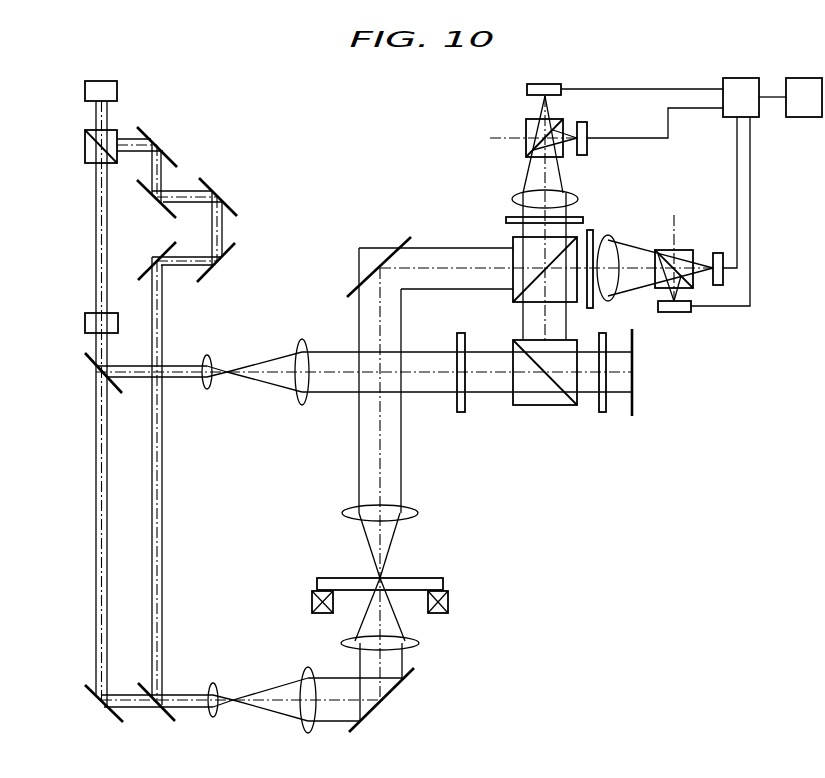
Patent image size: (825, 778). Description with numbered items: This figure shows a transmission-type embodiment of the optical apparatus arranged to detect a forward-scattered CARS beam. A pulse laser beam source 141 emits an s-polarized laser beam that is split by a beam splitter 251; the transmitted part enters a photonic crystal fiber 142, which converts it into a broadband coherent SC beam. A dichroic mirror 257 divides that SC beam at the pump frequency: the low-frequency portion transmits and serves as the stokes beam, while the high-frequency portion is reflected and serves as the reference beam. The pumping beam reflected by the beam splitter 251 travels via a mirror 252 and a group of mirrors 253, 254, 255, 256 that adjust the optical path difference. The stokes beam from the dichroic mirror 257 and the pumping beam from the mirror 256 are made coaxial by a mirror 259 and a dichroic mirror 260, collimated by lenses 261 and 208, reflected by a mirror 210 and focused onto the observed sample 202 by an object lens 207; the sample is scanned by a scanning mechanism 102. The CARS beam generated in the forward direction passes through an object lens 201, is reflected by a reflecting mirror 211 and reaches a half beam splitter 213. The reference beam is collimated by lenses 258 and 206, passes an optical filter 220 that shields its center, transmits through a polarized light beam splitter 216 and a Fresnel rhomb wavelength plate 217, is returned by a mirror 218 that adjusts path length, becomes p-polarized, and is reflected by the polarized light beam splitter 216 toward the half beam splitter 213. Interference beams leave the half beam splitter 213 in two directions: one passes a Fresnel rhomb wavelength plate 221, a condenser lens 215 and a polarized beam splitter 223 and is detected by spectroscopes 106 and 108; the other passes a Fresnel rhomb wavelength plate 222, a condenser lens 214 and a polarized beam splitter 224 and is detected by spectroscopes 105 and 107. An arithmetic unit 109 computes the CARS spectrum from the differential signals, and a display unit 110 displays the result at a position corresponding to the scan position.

The scanning mechanism 102 is at (449, 601).
The spectroscope 105 is at (550, 83).
The spectroscope 106 is at (717, 252).
The spectroscope 107 is at (589, 123).
The spectroscope 108 is at (676, 313).
The arithmetic unit 109 is at (742, 78).
The display unit 110 is at (806, 78).
The pulse laser beam source 141 is at (103, 80).
The photonic crystal fiber 142 is at (85, 322).
The object lens 201 is at (342, 513).
The observed sample 202 is at (420, 577).
The lens 206 is at (300, 340).
The object lens 207 is at (419, 643).
The lens 208 is at (305, 668).
The mirror 210 is at (405, 688).
The reflecting mirror 211 is at (372, 275).
The half beam splitter 213 is at (513, 240).
The condenser lens 214 is at (512, 192).
The condenser lens 215 is at (610, 236).
The polarized light beam splitter 216 is at (549, 406).
The Fresnel rhomb wavelength plate 217 is at (603, 413).
The mirror 218 is at (634, 400).
The optical filter 220 is at (462, 413).
The Fresnel rhomb wavelength plate 221 is at (590, 228).
The Fresnel rhomb wavelength plate 222 is at (506, 218).
The polarized beam splitter 223 is at (672, 248).
The polarized beam splitter 224 is at (526, 125).
The beam splitter 251 is at (85, 140).
The mirror 252 is at (159, 145).
The mirror 253 is at (155, 203).
The mirror 254 is at (220, 190).
The mirror 255 is at (225, 266).
The mirror 256 is at (150, 262).
The dichroic mirror 257 is at (88, 368).
The lens 258 is at (207, 355).
The mirror 259 is at (87, 697).
The dichroic mirror 260 is at (148, 684).
The lens 261 is at (213, 683).